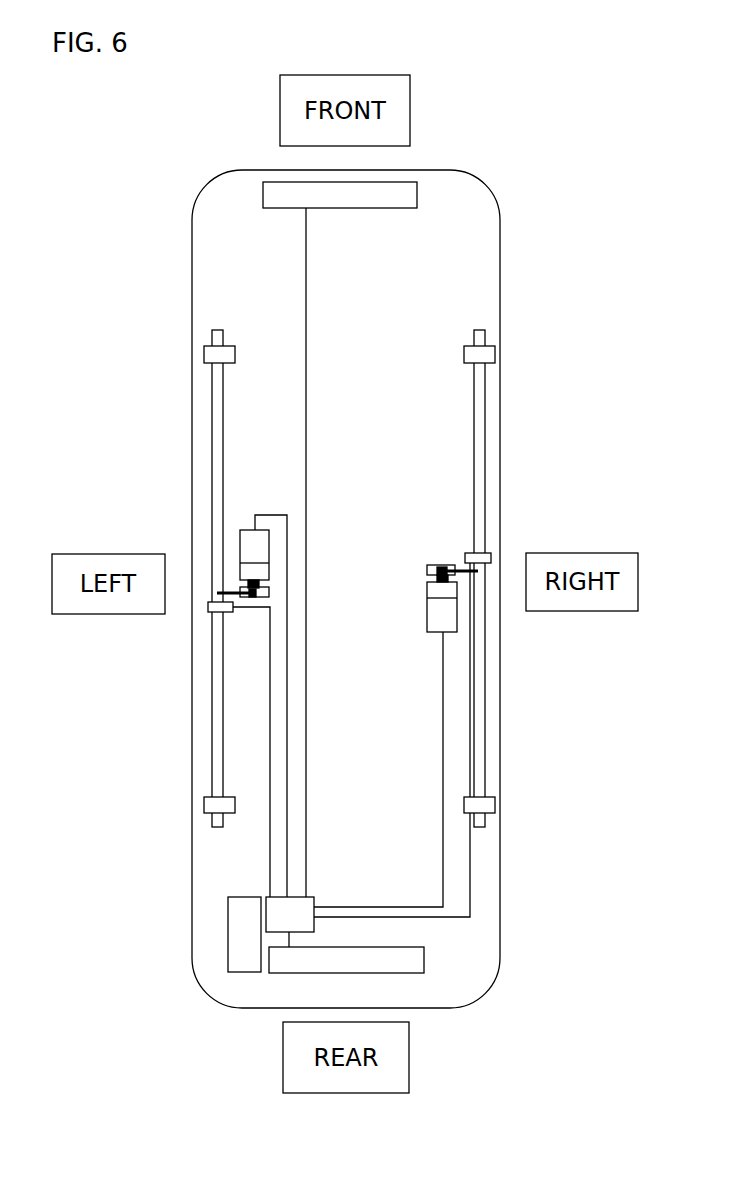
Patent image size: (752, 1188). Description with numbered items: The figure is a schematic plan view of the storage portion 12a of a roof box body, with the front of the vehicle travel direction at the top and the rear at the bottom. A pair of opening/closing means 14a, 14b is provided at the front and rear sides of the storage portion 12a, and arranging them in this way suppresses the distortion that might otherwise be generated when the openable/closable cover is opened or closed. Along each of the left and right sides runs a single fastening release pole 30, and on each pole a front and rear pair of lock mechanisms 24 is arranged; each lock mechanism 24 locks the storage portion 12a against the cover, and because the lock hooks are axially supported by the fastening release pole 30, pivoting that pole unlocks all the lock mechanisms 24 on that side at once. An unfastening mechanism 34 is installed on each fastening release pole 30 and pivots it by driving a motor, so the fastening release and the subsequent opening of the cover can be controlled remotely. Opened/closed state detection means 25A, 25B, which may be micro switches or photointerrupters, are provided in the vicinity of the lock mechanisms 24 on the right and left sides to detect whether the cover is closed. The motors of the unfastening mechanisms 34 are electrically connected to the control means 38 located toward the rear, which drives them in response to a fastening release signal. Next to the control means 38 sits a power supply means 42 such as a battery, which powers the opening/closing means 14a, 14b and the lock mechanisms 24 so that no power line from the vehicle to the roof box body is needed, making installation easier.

The storage portion 12a is at (218, 243).
The opening/closing means 14a is at (409, 182).
The opening/closing means 14b is at (403, 973).
The lock mechanism 24 is at (203, 355).
The fastening release pole 30 is at (215, 463).
The unfastening mechanism 34 is at (235, 560).
The opened/closed state detection means 25A is at (498, 556).
The opened/closed state detection means 25B is at (208, 607).
The control means 38 is at (299, 905).
The power supply means 42 is at (239, 934).